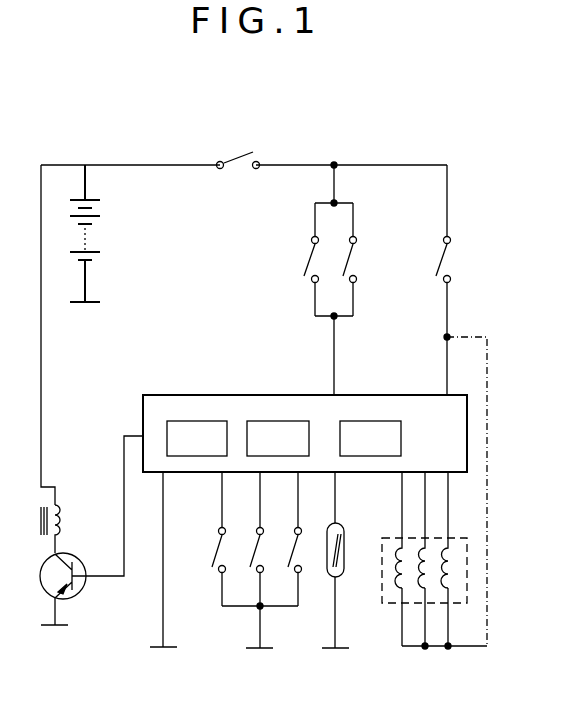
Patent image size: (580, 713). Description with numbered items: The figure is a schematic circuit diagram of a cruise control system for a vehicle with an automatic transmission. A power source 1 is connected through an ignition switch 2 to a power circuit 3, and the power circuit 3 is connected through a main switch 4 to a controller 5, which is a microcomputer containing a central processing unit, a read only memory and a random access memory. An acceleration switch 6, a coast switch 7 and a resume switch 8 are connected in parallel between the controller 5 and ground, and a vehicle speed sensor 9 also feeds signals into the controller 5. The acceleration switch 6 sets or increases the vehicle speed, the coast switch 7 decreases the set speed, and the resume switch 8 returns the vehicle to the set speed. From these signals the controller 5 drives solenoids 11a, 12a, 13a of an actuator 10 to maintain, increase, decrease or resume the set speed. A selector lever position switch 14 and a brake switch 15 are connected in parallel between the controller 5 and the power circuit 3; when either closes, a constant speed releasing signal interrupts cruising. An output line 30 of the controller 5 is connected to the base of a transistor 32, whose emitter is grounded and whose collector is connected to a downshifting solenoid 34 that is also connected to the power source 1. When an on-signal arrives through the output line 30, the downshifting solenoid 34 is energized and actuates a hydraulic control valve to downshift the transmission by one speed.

The power source 1 is at (98, 207).
The ignition switch 2 is at (234, 155).
The power circuit 3 is at (308, 163).
The main switch 4 is at (444, 262).
The controller 5 is at (280, 394).
The acceleration switch 6 is at (216, 556).
The coast switch 7 is at (250, 549).
The resume switch 8 is at (291, 549).
The vehicle speed sensor 9 is at (346, 548).
The actuator 10 is at (470, 595).
The solenoid 11a is at (397, 578).
The solenoid 12a is at (428, 556).
The solenoid 13a is at (448, 562).
The selector lever position switch 14 is at (311, 258).
The brake switch 15 is at (347, 262).
The output line 30 is at (118, 582).
The transistor 32 is at (75, 602).
The downshifting solenoid 34 is at (62, 523).